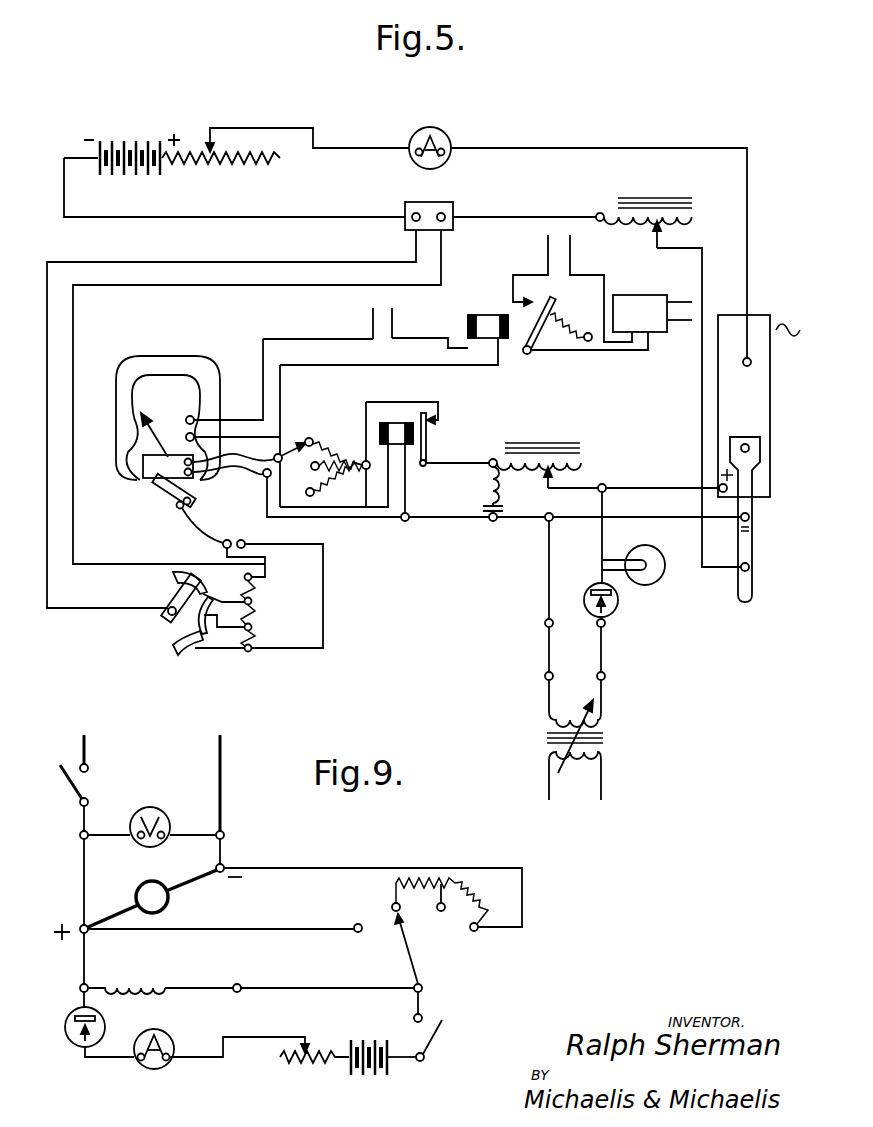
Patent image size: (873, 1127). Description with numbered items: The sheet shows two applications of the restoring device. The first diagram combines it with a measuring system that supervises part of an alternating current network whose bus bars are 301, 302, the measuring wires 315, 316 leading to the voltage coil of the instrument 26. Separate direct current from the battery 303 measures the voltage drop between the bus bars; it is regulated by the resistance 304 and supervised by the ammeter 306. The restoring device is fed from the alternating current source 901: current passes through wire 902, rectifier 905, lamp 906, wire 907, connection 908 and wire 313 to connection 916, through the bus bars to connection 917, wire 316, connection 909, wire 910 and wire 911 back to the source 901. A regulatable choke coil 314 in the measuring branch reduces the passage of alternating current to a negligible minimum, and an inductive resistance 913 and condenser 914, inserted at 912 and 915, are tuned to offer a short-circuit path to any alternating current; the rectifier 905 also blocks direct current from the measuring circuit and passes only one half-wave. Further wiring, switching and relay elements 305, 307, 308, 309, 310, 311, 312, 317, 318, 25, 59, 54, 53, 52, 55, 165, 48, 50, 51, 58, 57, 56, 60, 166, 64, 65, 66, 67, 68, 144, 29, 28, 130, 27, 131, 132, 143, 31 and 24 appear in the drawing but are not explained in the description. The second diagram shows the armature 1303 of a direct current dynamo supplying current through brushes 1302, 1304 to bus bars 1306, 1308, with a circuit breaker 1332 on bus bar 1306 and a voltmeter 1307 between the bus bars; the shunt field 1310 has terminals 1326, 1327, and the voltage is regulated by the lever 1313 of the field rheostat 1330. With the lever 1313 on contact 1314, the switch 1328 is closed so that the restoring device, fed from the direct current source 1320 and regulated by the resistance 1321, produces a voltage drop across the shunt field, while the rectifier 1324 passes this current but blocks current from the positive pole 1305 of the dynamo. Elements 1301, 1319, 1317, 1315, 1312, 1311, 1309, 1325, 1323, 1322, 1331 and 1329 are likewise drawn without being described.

In FIG. 5, the battery 303 is at (127, 142).
In FIG. 5, the resistance 304 is at (200, 163).
In FIG. 5, the conductor 305 is at (283, 120).
In FIG. 5, the ammeter 306 is at (455, 124).
In FIG. 5, the conductor 307 is at (627, 147).
In FIG. 5, the conductor 308 is at (206, 219).
In FIG. 5, the switch 309 is at (435, 200).
In FIG. 5, the conductor 310 is at (552, 210).
In FIG. 5, the relay coil 311 is at (670, 194).
In FIG. 5, the conductor 312 is at (684, 248).
In FIG. 5, the wire 313 is at (686, 490).
In FIG. 5, the regulatable choke coil 314 is at (535, 440).
In FIG. 5, the measuring wire 315 is at (438, 466).
In FIG. 5, the measuring wire 316 is at (660, 516).
In FIG. 5, the conductor 317 is at (273, 288).
In FIG. 5, the conductor 318 is at (342, 246).
In FIG. 5, the bus bar 301 is at (770, 406).
In FIG. 5, the bus bar 302 is at (737, 593).
In FIG. 5, the measuring instrument 26 is at (168, 418).
In FIG. 5, the armature block 25 is at (168, 466).
In FIG. 5, the contact 59 is at (187, 416).
In FIG. 5, the contact 54 is at (185, 439).
In FIG. 5, the contact arm 53 is at (168, 486).
In FIG. 5, the switch 52 is at (269, 580).
In FIG. 5, the conductor 55 is at (198, 538).
In FIG. 5, the contact 165 is at (260, 568).
In FIG. 5, the resistor 48 is at (254, 625).
In FIG. 5, the switch blade 50 is at (178, 590).
In FIG. 5, the contact segments 51 is at (325, 596).
In FIG. 5, the conductor 58 is at (376, 313).
In FIG. 5, the conductor 57 is at (425, 341).
In FIG. 5, the relay 56 is at (488, 326).
In FIG. 5, the conductor 60 is at (311, 338).
In FIG. 5, the conductor 166 is at (363, 351).
In FIG. 5, the switch 64 is at (513, 300).
In FIG. 5, the conductor 65 is at (572, 281).
In FIG. 5, the relay 66 is at (640, 313).
In FIG. 5, the conductor 67 is at (676, 299).
In FIG. 5, the conductor 68 is at (676, 324).
In FIG. 5, the contact 144 is at (305, 432).
In FIG. 5, the resistor 29 is at (338, 445).
In FIG. 5, the conductor 28 is at (404, 402).
In FIG. 5, the relay coil 130 is at (398, 422).
In FIG. 5, the armature 27 is at (427, 431).
In FIG. 5, the conductor 131 is at (386, 494).
In FIG. 5, the conductor 132 is at (408, 502).
In FIG. 5, the conductor 143 is at (345, 518).
In FIG. 5, the conductor 31 is at (245, 467).
In FIG. 5, the conductor 24 is at (223, 474).
In FIG. 5, the connection point 912 is at (490, 458).
In FIG. 5, the inductive resistance 913 is at (480, 485).
In FIG. 5, the condenser 914 is at (478, 509).
In FIG. 5, the connection point 915 is at (492, 521).
In FIG. 5, the connection 916 is at (719, 486).
In FIG. 5, the connection 917 is at (750, 517).
In FIG. 5, the connection 908 is at (604, 484).
In FIG. 5, the connection 909 is at (553, 521).
In FIG. 5, the wire 907 is at (606, 530).
In FIG. 5, the lamp 906 is at (666, 570).
In FIG. 5, the rectifier 905 is at (619, 602).
In FIG. 5, the wire 910 is at (546, 593).
In FIG. 5, the wire 911 is at (545, 700).
In FIG. 5, the wire 902 is at (605, 700).
In FIG. 5, the alternating current source 901 is at (608, 743).
In FIG. 9, the circuit breaker 1332 is at (64, 794).
In FIG. 9, the voltmeter 1307 is at (143, 806).
In FIG. 9, the bus bar 1308 is at (226, 846).
In FIG. 9, the terminal 1301 is at (216, 866).
In FIG. 9, the dynamo brush 1302 is at (178, 894).
In FIG. 9, the armature 1303 is at (152, 897).
In FIG. 9, the dynamo brush 1304 is at (112, 903).
In FIG. 9, the bus bar 1306 is at (74, 924).
In FIG. 9, the positive pole 1305 is at (76, 940).
In FIG. 9, the contact 1319 is at (352, 924).
In FIG. 9, the contact 1317 is at (491, 928).
In FIG. 9, the field rheostat 1330 is at (462, 884).
In FIG. 9, the contact 1314 is at (391, 908).
In FIG. 9, the contact 1315 is at (436, 914).
In FIG. 9, the regulating lever 1313 is at (412, 957).
In FIG. 9, the junction 1312 is at (423, 989).
In FIG. 9, the shunt field terminal 1327 is at (416, 1005).
In FIG. 9, the conductor 1311 is at (323, 988).
In FIG. 9, the shunt field 1310 is at (142, 984).
In FIG. 9, the conductor 1309 is at (87, 956).
In FIG. 9, the shunt field terminal 1326 is at (80, 990).
In FIG. 9, the conductor 1325 is at (78, 1006).
In FIG. 9, the rectifier 1324 is at (70, 1047).
In FIG. 9, the conductor 1323 is at (104, 1060).
In FIG. 9, the ammeter 1322 is at (155, 1071).
In FIG. 9, the conductor 1331 is at (206, 1063).
In FIG. 9, the resistance 1321 is at (300, 1064).
In FIG. 9, the direct current source 1320 is at (366, 1080).
In FIG. 9, the contact 1329 is at (400, 1063).
In FIG. 9, the switch 1328 is at (438, 1044).